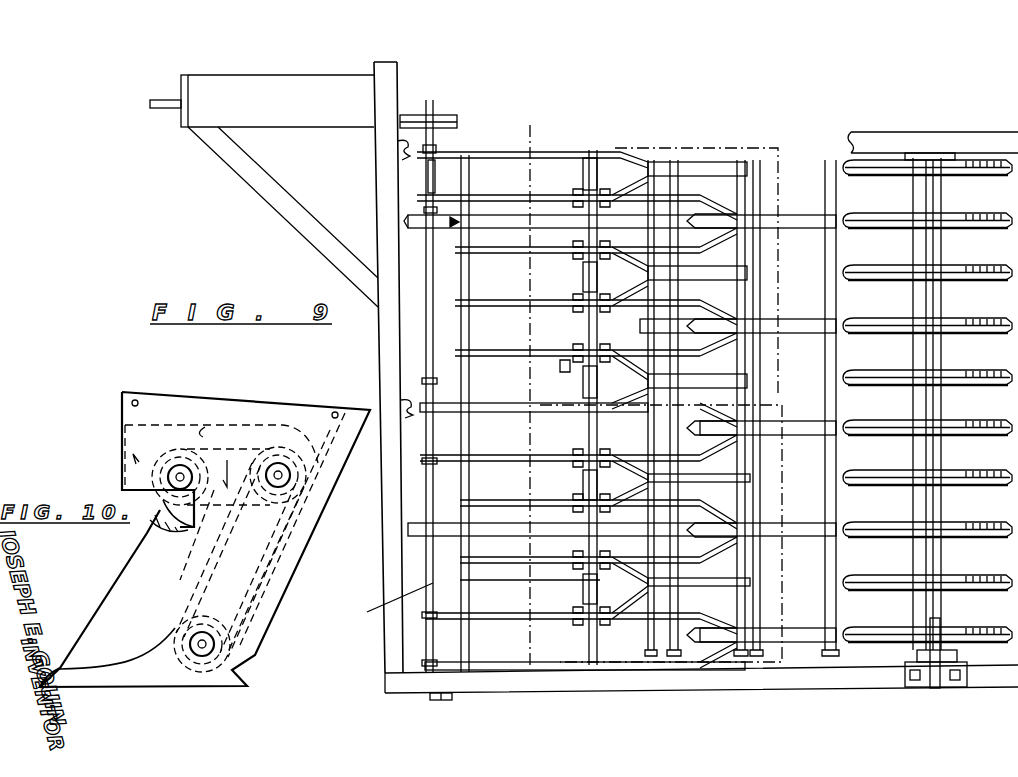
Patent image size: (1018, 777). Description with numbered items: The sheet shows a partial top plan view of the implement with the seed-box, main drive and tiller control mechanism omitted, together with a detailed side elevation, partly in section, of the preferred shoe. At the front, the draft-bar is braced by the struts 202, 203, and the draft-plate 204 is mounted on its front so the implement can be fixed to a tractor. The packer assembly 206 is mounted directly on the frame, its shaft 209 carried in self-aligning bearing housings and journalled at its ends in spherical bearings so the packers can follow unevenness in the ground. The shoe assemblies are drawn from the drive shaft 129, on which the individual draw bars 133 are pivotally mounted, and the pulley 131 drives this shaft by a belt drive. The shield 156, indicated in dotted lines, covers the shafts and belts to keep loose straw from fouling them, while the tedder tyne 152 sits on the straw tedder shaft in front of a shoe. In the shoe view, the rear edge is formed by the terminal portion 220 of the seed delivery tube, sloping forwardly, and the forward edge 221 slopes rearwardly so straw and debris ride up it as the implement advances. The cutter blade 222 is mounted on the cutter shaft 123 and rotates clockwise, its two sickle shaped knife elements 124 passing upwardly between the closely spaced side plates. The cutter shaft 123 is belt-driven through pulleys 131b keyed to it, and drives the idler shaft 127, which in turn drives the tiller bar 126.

In FIG. 9, the strut 202 is at (305, 86).
In FIG. 9, the strut 203 is at (235, 76).
In FIG. 9, the draft-plate 204 is at (168, 106).
In FIG. 9, the pulley 131 is at (436, 116).
In FIG. 9, the pulley 131b is at (450, 228).
In FIG. 10, the pulley 131b is at (271, 543).
In FIG. 9, the shield 156 is at (751, 146).
In FIG. 9, the tedder tyne 152 is at (560, 371).
In FIG. 9, the draw bar 133 is at (600, 584).
In FIG. 9, the packer assembly 206 is at (975, 224).
In FIG. 9, the shaft 209 is at (936, 247).
In FIG. 10, the cutter shaft 123 is at (180, 473).
In FIG. 10, the sickle shaped knife element 124 is at (210, 425).
In FIG. 10, the idler shaft 127 is at (292, 476).
In FIG. 10, the tiller bar 126 is at (225, 646).
In FIG. 10, the cutter blade 222 is at (177, 519).
In FIG. 10, the forward edge 221 is at (110, 595).
In FIG. 10, the terminal portion 220 is at (395, 548).
In FIG. 10, the drive shaft 129 is at (369, 605).